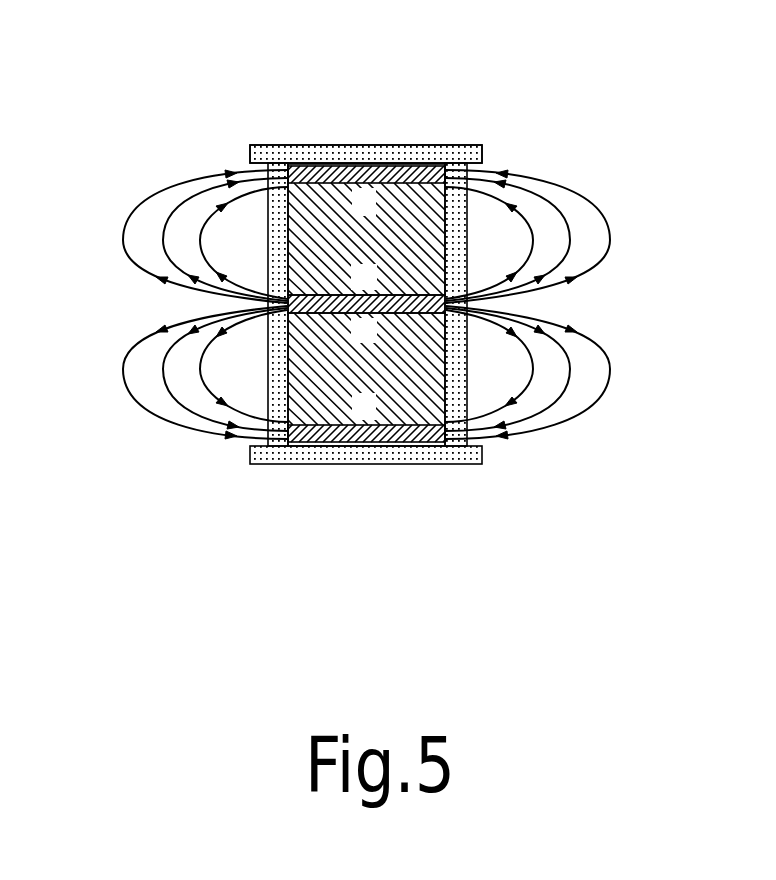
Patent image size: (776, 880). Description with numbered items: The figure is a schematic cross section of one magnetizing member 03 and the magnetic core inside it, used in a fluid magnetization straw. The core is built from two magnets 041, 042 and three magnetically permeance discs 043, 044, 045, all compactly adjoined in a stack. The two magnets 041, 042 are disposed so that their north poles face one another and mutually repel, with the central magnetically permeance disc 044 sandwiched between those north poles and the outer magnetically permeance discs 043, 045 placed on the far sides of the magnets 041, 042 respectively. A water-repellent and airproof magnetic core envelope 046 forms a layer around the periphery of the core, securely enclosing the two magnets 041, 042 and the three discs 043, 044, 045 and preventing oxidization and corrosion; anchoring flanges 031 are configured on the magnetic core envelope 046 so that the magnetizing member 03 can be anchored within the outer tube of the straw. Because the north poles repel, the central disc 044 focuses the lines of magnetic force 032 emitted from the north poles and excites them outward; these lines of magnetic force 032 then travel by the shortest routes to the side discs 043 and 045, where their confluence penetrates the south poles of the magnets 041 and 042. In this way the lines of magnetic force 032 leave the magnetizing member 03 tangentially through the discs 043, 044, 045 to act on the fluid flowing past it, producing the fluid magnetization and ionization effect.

The magnetizing member 03 is at (533, 112).
The anchoring flange 031 is at (249, 150).
The lines of magnetic force 032 is at (583, 202).
The magnet 041 is at (329, 215).
The magnet 042 is at (334, 378).
The magnetically permeance disc 043 is at (378, 175).
The magnetically permeance disc 044 is at (287, 299).
The magnetically permeance disc 045 is at (402, 435).
The magnetic core envelope 046 is at (405, 157).